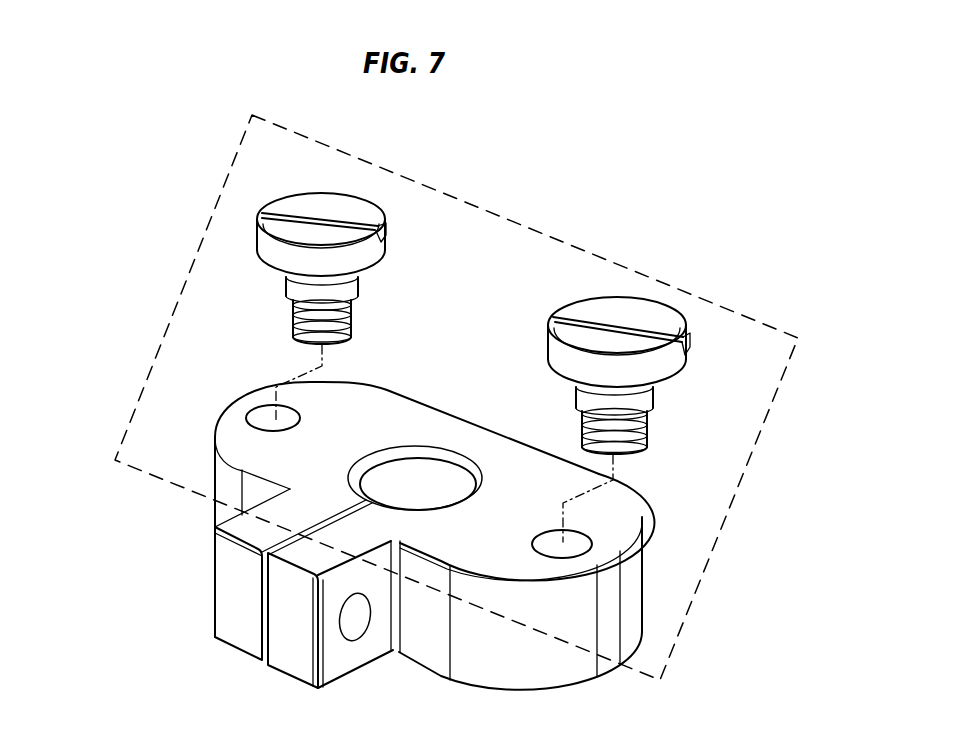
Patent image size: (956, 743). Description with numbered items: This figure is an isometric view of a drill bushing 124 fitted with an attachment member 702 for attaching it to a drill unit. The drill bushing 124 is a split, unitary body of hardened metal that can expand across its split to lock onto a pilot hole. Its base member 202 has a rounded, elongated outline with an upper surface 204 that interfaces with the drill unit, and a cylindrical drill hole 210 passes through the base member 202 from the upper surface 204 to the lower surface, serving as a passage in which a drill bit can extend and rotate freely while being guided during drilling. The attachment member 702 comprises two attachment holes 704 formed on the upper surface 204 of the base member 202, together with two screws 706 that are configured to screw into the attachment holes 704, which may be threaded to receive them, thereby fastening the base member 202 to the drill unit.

The drill bushing 124 is at (136, 595).
The base member 202 is at (647, 563).
The upper surface 204 is at (401, 408).
The drill hole 210 is at (465, 482).
The attachment member 702 is at (580, 248).
The attachment holes 704 is at (291, 423).
The screws 706 is at (370, 259).